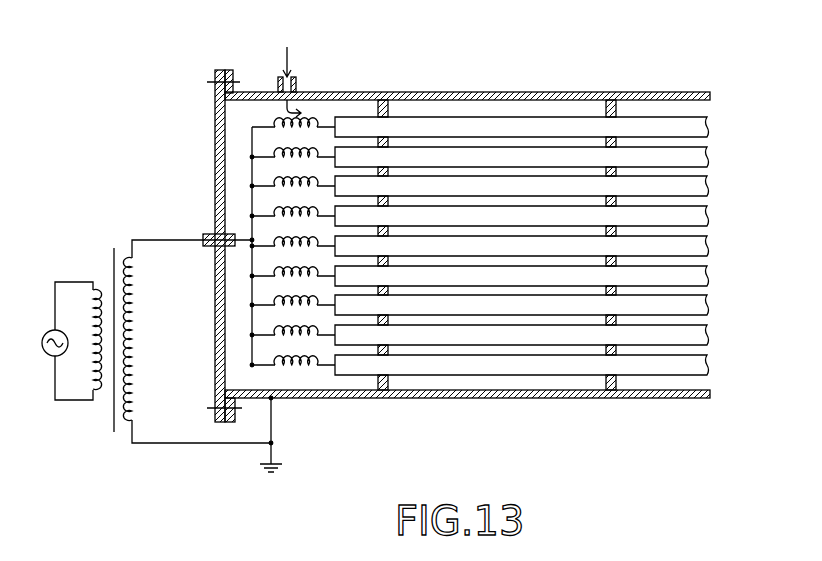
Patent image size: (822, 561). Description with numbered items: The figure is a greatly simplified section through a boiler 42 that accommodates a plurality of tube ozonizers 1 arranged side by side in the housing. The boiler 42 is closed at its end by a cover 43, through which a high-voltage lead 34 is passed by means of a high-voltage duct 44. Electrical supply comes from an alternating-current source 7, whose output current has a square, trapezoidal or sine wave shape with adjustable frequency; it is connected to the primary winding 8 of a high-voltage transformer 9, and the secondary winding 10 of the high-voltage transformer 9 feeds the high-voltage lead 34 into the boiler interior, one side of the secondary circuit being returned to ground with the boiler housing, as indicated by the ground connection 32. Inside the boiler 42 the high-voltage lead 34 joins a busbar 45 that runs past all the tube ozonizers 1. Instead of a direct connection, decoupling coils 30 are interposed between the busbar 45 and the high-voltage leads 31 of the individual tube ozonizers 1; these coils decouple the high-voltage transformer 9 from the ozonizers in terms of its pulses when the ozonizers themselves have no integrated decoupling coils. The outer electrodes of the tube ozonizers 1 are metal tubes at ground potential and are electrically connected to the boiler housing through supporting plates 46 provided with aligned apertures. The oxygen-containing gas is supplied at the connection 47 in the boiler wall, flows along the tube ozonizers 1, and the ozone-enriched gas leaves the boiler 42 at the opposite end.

The tube ozonizer 1 is at (688, 128).
The alternating-current source 7 is at (51, 356).
The primary winding 8 is at (92, 372).
The high-voltage transformer 9 is at (108, 455).
The secondary winding 10 is at (135, 380).
The decoupling coil 30 is at (282, 122).
The high-voltage lead 31 is at (323, 122).
The ground lead 32 is at (190, 443).
The high-voltage lead 34 is at (165, 240).
The boiler 42 is at (538, 92).
The cover 43 is at (222, 112).
The high-voltage duct 44 is at (209, 246).
The busbar 45 is at (252, 352).
The supporting plate 46 is at (386, 100).
The connection 47 is at (297, 82).